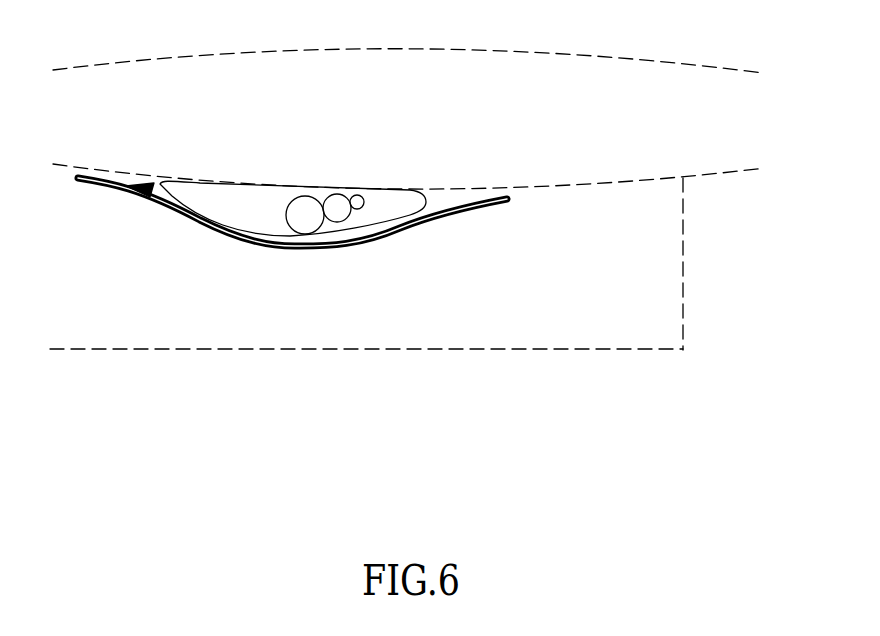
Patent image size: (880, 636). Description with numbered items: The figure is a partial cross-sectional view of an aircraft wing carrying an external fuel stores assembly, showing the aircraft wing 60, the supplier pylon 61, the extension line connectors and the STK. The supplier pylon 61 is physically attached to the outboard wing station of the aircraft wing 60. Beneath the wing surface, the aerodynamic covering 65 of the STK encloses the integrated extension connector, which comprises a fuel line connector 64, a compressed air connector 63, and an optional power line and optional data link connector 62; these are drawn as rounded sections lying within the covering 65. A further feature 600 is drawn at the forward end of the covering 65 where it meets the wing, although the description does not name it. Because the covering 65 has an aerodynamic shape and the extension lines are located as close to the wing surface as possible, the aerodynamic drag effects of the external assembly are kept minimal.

The aircraft wing 60 is at (733, 125).
The supplier pylon 61 is at (642, 267).
The optional power line and optional data link connector 62 is at (365, 203).
The compressed air connector 63 is at (338, 210).
The fuel line connector 64 is at (303, 213).
The aerodynamic covering 65 is at (205, 222).
The wedge 600 is at (130, 190).